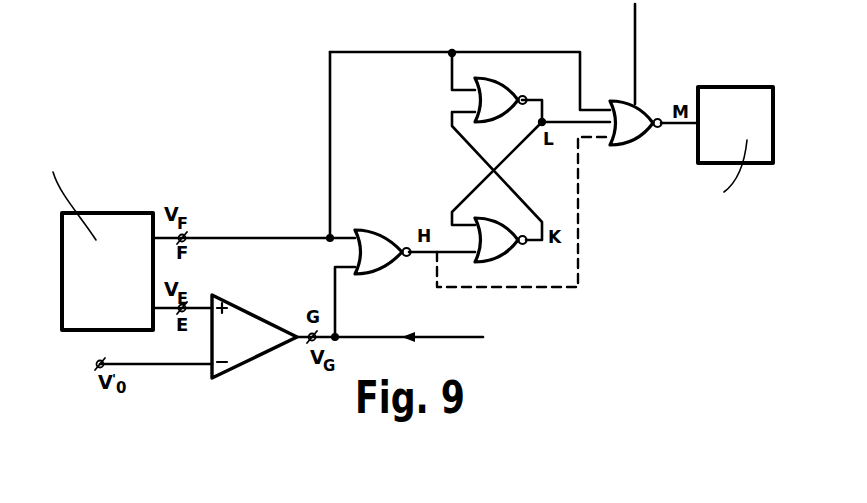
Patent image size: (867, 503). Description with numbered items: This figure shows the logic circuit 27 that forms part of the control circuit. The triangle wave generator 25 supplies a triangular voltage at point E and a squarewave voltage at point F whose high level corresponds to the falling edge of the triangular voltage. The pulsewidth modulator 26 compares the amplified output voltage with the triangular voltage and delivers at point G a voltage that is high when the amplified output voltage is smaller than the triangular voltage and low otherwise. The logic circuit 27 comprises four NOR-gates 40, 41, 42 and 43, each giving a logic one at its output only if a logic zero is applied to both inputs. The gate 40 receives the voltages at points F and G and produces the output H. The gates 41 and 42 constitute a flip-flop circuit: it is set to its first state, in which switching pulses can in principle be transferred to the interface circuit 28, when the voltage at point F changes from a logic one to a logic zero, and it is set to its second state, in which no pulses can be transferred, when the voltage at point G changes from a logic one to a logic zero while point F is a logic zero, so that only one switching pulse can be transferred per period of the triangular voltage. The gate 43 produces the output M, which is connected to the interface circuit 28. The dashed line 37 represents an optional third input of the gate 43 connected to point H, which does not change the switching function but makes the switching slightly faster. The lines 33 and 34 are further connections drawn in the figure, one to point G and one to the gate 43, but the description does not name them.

The triangle wave generator 25 is at (133, 213).
The pulsewidth modulator 26 is at (245, 363).
The logic circuit 27 is at (398, 49).
The interface circuit 28 is at (742, 87).
The input line 33 is at (441, 338).
The input line 34 is at (636, 30).
The dashed line 37 is at (442, 289).
The NOR-gate 40 is at (390, 275).
The NOR-gate 41 is at (505, 262).
The NOR-gate 42 is at (507, 80).
The NOR-gate 43 is at (635, 104).